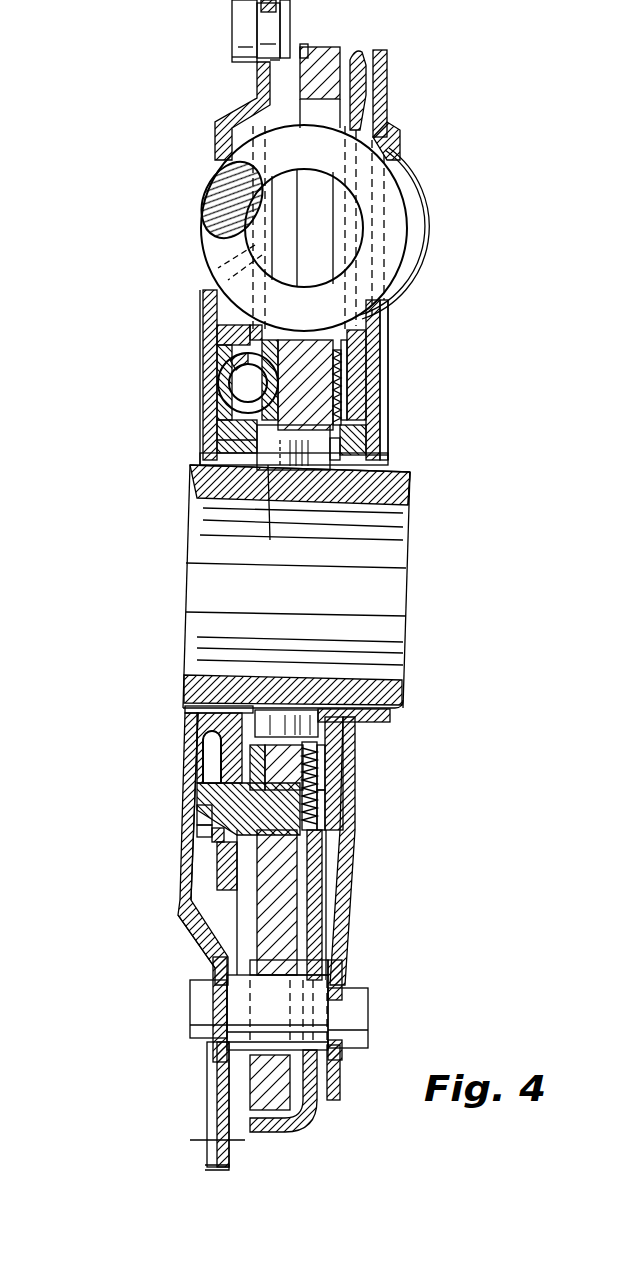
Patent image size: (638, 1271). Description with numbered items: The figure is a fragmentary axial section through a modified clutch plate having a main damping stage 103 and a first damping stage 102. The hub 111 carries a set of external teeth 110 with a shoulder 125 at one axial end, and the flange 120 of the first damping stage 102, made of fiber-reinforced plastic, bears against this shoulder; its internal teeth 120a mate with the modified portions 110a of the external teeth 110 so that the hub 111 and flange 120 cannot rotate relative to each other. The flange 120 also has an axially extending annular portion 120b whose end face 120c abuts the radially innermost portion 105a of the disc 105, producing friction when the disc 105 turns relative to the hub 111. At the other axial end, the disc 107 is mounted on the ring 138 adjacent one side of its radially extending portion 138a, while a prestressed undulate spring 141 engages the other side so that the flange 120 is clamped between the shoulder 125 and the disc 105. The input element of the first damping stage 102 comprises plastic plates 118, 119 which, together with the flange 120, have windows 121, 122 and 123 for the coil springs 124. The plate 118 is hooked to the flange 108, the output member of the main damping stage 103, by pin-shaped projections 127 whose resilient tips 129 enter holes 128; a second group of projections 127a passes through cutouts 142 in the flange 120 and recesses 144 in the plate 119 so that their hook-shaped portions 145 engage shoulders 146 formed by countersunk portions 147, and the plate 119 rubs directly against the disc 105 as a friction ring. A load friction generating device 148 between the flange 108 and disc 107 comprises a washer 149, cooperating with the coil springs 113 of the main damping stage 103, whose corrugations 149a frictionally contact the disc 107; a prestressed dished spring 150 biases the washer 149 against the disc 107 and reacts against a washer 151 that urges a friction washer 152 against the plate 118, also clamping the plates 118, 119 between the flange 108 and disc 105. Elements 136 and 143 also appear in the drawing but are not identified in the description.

The main damping stage 103 is at (148, 155).
The corrugations 149a is at (360, 62).
The energy storing coil springs 113 is at (215, 205).
The first damping stage 102 is at (194, 290).
The disc 107 is at (388, 330).
The window 123 is at (225, 333).
The window 122 is at (238, 352).
The flange 120 is at (222, 428).
The energy storing coil springs 124 is at (236, 383).
The radially innermost portion 105a is at (208, 420).
The annular portion 120b is at (215, 443).
The window 121 is at (283, 335).
The washer 151 is at (345, 355).
The friction generating washer 152 is at (340, 380).
The dished spring 150 is at (345, 402).
The annular spring 141 is at (355, 445).
The radially extending portion 138a is at (345, 460).
The ring 138 is at (388, 466).
The spacer 136 is at (405, 505).
The shoulder 125 is at (275, 513).
The hub 111 is at (272, 586).
The internal teeth 120a is at (205, 490).
The plate 118 is at (255, 712).
The external teeth 110 is at (300, 715).
The modified portions 110a is at (185, 709).
The end face 120c is at (197, 728).
The plate 119 is at (197, 762).
The countersunk portions 147 is at (203, 778).
The flange 108 is at (345, 760).
The hook-shaped portions 145 is at (205, 792).
The cutouts 142 is at (197, 810).
The pin-shaped projections 127 is at (345, 798).
The ring 143 is at (203, 826).
The shoulders 146 is at (212, 832).
The free end portions 129 is at (330, 815).
The recesses 144 is at (212, 855).
The recesses 128 is at (325, 822).
The disc 105 is at (188, 893).
The load friction generating device 148 is at (325, 892).
The projections 127a is at (195, 925).
The washer 149 is at (345, 940).